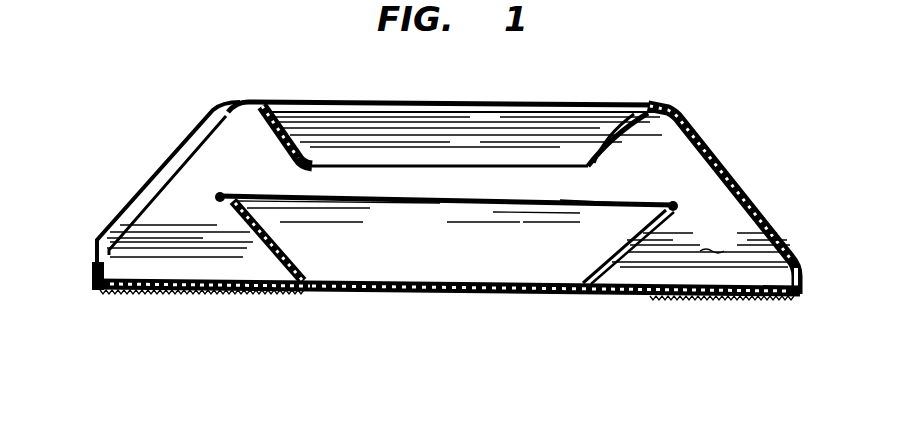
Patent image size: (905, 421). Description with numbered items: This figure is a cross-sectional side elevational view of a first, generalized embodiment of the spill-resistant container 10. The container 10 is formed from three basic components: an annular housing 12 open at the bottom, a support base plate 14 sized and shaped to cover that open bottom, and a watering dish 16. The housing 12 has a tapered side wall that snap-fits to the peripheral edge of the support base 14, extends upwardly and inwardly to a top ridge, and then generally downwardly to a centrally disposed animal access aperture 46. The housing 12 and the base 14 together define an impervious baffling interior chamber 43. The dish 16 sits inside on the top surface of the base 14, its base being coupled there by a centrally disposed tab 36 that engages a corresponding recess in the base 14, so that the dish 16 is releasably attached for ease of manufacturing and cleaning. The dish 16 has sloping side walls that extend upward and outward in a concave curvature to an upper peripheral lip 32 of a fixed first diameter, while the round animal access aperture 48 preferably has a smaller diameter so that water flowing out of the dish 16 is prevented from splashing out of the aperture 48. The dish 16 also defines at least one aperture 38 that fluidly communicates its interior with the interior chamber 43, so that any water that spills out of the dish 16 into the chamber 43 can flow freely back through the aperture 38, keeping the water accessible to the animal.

The spill-resistant container 10 is at (429, 191).
The annular housing 12 is at (152, 184).
The support base plate 14 is at (283, 291).
The watering dish 16 is at (637, 247).
The peripheral lip 32 is at (674, 201).
The tab 36 is at (453, 293).
The aperture 38 is at (293, 262).
The interior chamber 43 is at (701, 248).
The animal access aperture 46 is at (318, 163).
The animal access aperture 48 is at (517, 132).